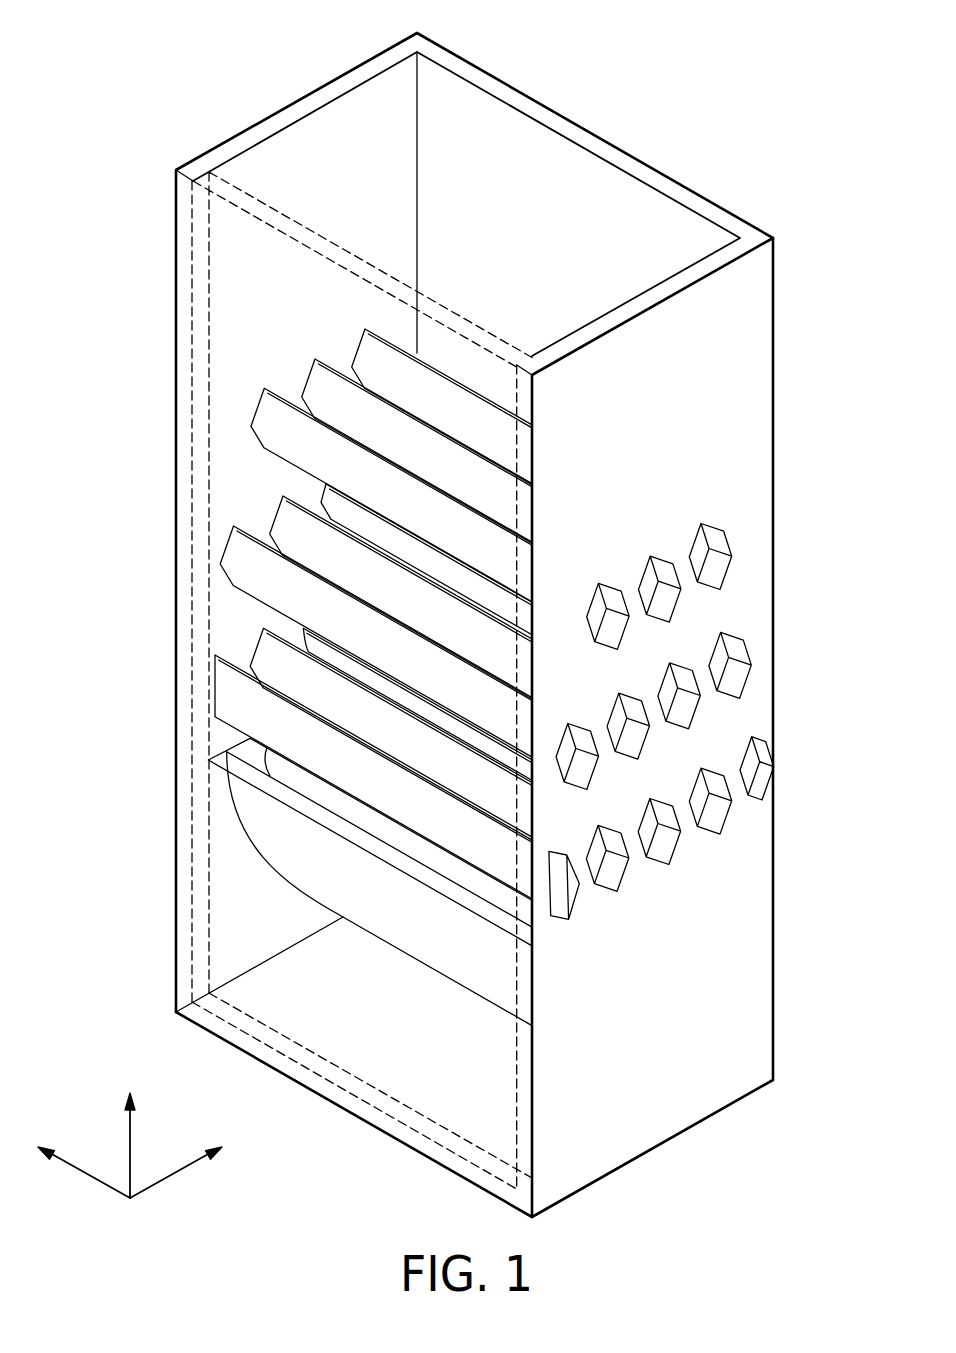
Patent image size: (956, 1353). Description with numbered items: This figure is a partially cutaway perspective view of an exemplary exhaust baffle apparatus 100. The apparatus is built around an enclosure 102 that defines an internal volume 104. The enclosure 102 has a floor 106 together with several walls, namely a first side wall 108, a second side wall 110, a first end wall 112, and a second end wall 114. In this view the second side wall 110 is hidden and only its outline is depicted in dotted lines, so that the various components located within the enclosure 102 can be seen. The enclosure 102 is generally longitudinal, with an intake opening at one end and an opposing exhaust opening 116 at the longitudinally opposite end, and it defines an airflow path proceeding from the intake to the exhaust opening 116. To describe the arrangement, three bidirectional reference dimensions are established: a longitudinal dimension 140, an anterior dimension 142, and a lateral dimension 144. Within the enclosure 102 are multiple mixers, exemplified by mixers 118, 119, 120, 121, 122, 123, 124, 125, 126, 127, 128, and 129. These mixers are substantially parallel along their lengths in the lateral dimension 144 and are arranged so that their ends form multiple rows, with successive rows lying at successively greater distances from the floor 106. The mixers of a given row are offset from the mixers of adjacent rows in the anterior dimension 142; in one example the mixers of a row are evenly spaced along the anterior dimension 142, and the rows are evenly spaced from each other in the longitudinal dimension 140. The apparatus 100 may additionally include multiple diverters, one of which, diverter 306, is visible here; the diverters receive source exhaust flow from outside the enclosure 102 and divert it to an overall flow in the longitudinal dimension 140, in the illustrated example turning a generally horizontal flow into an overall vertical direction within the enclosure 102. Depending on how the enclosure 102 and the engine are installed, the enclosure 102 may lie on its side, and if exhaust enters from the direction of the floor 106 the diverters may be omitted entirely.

The baffle apparatus 100 is at (148, 52).
The enclosure 102 is at (755, 207).
The internal volume 104 is at (240, 222).
The floor 106 is at (426, 1043).
The first side wall 108 is at (506, 223).
The second side wall 110 is at (229, 188).
The first end wall 112 is at (666, 425).
The second end wall 114 is at (337, 171).
The exhaust opening 116 is at (508, 120).
The mixer 118 is at (604, 581).
The mixer 119 is at (651, 553).
The mixer 120 is at (703, 522).
The mixer 121 is at (569, 722).
The mixer 122 is at (634, 736).
The mixer 123 is at (687, 713).
The mixer 124 is at (747, 653).
The mixer 125 is at (556, 918).
The mixer 126 is at (611, 888).
The mixer 127 is at (661, 860).
The mixer 128 is at (710, 833).
The mixer 129 is at (775, 775).
The longitudinal dimension 140 is at (132, 1127).
The anterior dimension 142 is at (177, 1177).
The lateral dimension 144 is at (88, 1177).
The diverter 306 is at (420, 918).